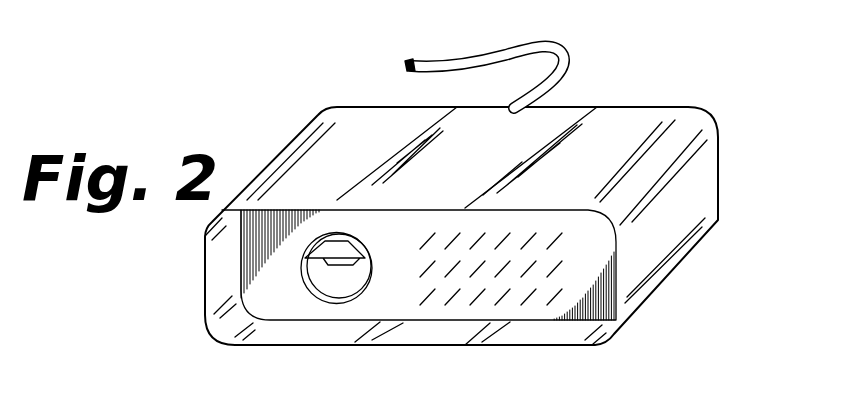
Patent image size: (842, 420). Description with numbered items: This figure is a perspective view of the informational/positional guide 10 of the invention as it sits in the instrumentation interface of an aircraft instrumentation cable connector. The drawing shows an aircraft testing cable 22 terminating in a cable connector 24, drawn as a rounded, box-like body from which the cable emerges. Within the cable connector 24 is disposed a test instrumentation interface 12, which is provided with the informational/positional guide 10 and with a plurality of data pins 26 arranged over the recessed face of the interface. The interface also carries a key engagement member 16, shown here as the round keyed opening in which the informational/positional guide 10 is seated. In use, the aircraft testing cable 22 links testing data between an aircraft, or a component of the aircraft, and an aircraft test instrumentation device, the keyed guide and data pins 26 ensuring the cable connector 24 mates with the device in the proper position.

The informational/positional guide 10 is at (330, 248).
The test instrumentation interface 12 is at (470, 362).
The key engagement member 16 is at (346, 266).
The aircraft testing cable 22 is at (515, 50).
The cable connector 24 is at (482, 167).
The data pins 26 is at (512, 235).